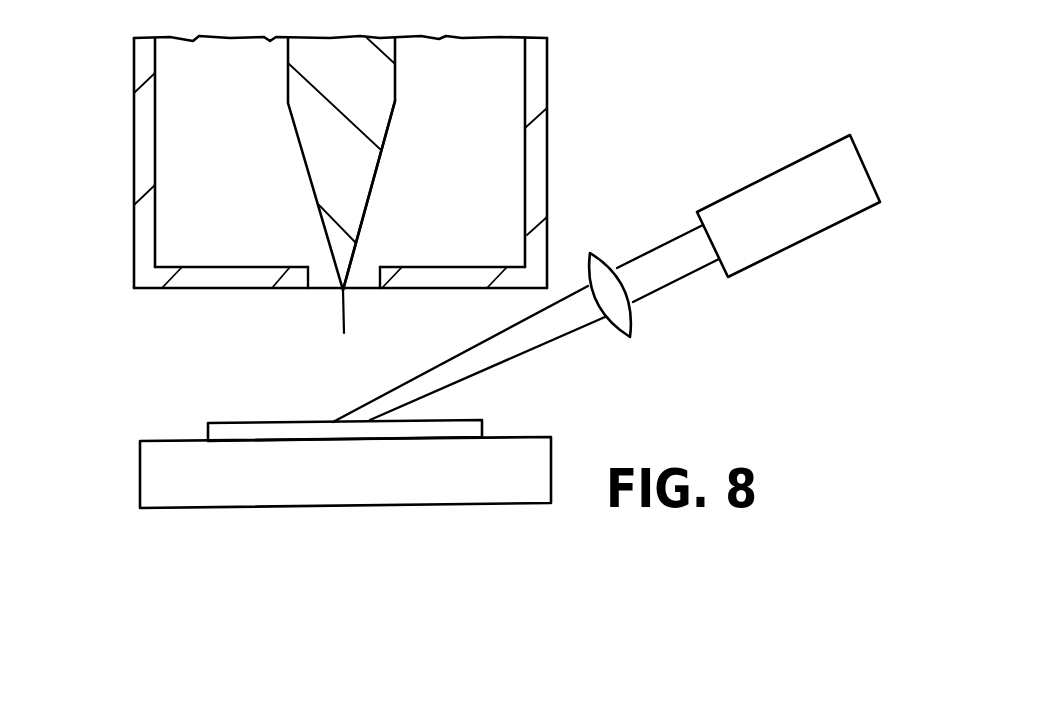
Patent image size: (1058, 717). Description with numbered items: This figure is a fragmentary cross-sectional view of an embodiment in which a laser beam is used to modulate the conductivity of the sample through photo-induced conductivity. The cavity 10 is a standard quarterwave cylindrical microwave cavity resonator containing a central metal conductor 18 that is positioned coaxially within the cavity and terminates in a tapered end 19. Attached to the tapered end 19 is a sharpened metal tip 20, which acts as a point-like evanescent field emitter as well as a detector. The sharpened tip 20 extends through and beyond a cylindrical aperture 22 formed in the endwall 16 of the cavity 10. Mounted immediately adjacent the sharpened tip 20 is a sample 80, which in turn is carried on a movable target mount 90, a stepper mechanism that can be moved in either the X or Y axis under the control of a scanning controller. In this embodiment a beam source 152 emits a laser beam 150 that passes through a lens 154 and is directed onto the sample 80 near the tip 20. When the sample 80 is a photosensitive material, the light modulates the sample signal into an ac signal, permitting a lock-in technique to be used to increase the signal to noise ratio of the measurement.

The cavity 10 is at (90, 180).
The endwall 16 is at (208, 290).
The central metal conductor 18 is at (287, 82).
The tapered end 19 is at (376, 196).
The sharpened metal tip 20 is at (347, 313).
The aperture 22 is at (323, 276).
The sample 80 is at (208, 430).
The target mount 90 is at (140, 470).
The laser beam 150 is at (525, 352).
The beam source 152 is at (790, 164).
The lens 154 is at (607, 254).